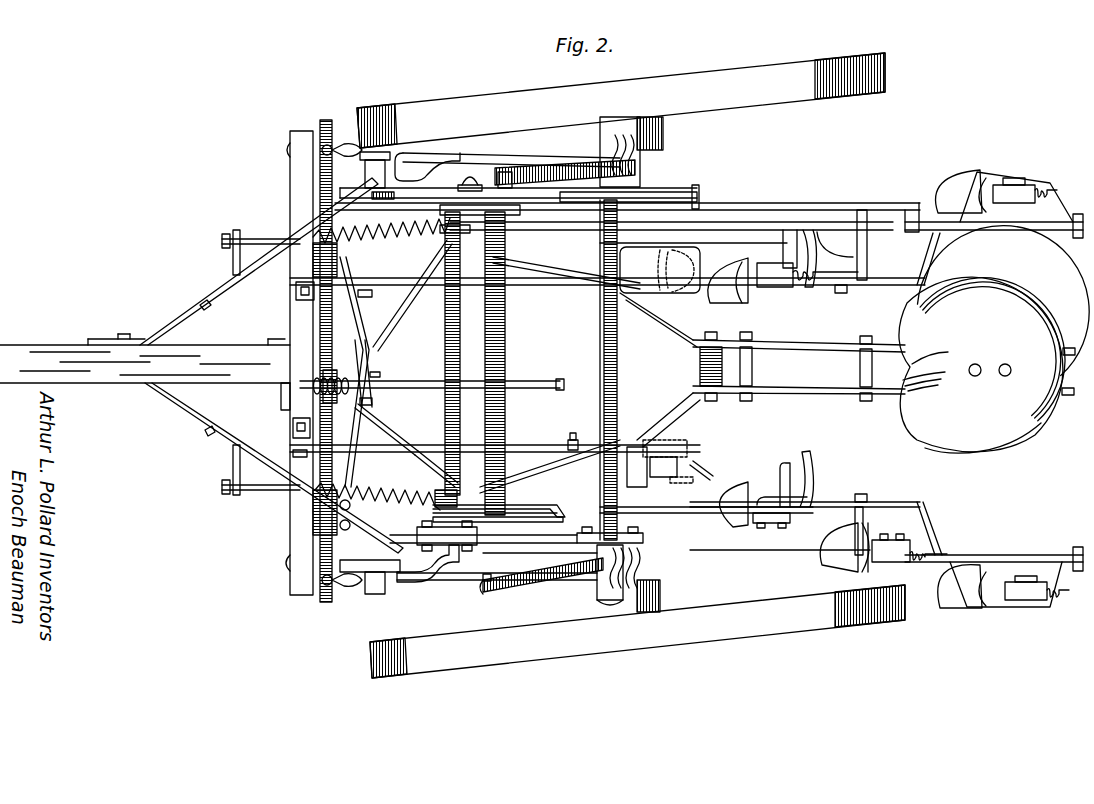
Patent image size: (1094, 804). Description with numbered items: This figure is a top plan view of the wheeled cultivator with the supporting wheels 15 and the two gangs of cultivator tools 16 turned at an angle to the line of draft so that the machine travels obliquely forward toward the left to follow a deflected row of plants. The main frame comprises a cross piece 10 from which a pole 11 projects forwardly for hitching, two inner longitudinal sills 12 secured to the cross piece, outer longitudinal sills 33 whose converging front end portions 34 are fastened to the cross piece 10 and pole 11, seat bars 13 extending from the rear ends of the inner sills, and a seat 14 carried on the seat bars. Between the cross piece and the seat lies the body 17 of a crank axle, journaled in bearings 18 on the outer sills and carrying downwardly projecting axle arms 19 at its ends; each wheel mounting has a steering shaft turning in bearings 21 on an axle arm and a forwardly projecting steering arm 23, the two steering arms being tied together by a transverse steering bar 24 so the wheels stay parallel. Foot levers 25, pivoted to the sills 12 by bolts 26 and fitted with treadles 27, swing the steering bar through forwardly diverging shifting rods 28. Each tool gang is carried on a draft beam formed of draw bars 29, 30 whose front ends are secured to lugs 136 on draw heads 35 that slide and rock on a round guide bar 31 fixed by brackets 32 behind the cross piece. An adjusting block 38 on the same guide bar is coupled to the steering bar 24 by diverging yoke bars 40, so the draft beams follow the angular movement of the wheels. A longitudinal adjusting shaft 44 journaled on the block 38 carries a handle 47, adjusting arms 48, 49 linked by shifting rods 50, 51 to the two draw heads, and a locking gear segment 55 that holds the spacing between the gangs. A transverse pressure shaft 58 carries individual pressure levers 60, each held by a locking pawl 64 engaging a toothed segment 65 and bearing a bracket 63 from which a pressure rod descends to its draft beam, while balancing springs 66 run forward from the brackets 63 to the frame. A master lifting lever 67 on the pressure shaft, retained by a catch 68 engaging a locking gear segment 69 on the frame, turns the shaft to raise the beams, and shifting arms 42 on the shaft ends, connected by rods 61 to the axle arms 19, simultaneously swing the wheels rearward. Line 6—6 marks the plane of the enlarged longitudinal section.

The section line 6 is at (300, 390).
The main cross piece 10 is at (291, 134).
The longitudinal pole 11 is at (145, 351).
The inner longitudinal sills 12 is at (532, 287).
The longitudinal seat bars 13 is at (830, 352).
The seat 14 is at (994, 340).
The supporting wheels 15 is at (778, 76).
The gangs of cultivator tools 16 is at (952, 178).
The crank axle body 17 is at (618, 381).
The bearings 18 is at (640, 196).
The axle arms 19 is at (603, 140).
The bearings 21 is at (645, 565).
The steering arm 23 is at (556, 168).
The steering bar 24 is at (505, 352).
The foot levers 25 is at (650, 290).
The bolts 26 is at (573, 433).
The pedal or treadle 27 is at (650, 170).
The shifting rods 28 is at (556, 268).
The drag bar 29 is at (998, 231).
The drag bar 30 is at (830, 286).
The guide bar 31 is at (327, 121).
The brackets 32 is at (346, 144).
The outer longitudinal sills 33 is at (400, 192).
The front end portions 34 is at (186, 316).
The draw heads 35 is at (312, 264).
The adjusting block 38 is at (323, 403).
The yoke bars 40 is at (412, 313).
The shifting arms 42 is at (405, 152).
The adjusting shaft 44 is at (466, 381).
The handle 47 is at (553, 373).
The adjusting arm 48 is at (372, 402).
The adjusting arm 49 is at (378, 370).
The shifting rod 50 is at (386, 429).
The shifting rod 51 is at (358, 325).
The locking gear segment 55 is at (340, 376).
The pressure shaft 58 is at (460, 338).
The pressure lever 60 is at (730, 222).
The link 61 is at (518, 150).
The bracket 63 is at (552, 519).
The locking pawl 64 is at (566, 266).
The toothed locking segment 65 is at (480, 240).
The spring 66 is at (381, 376).
The lifting lever 67 is at (818, 204).
The catch 68 is at (510, 168).
The locking gear segment 69 is at (470, 183).
The lugs 136 is at (362, 298).